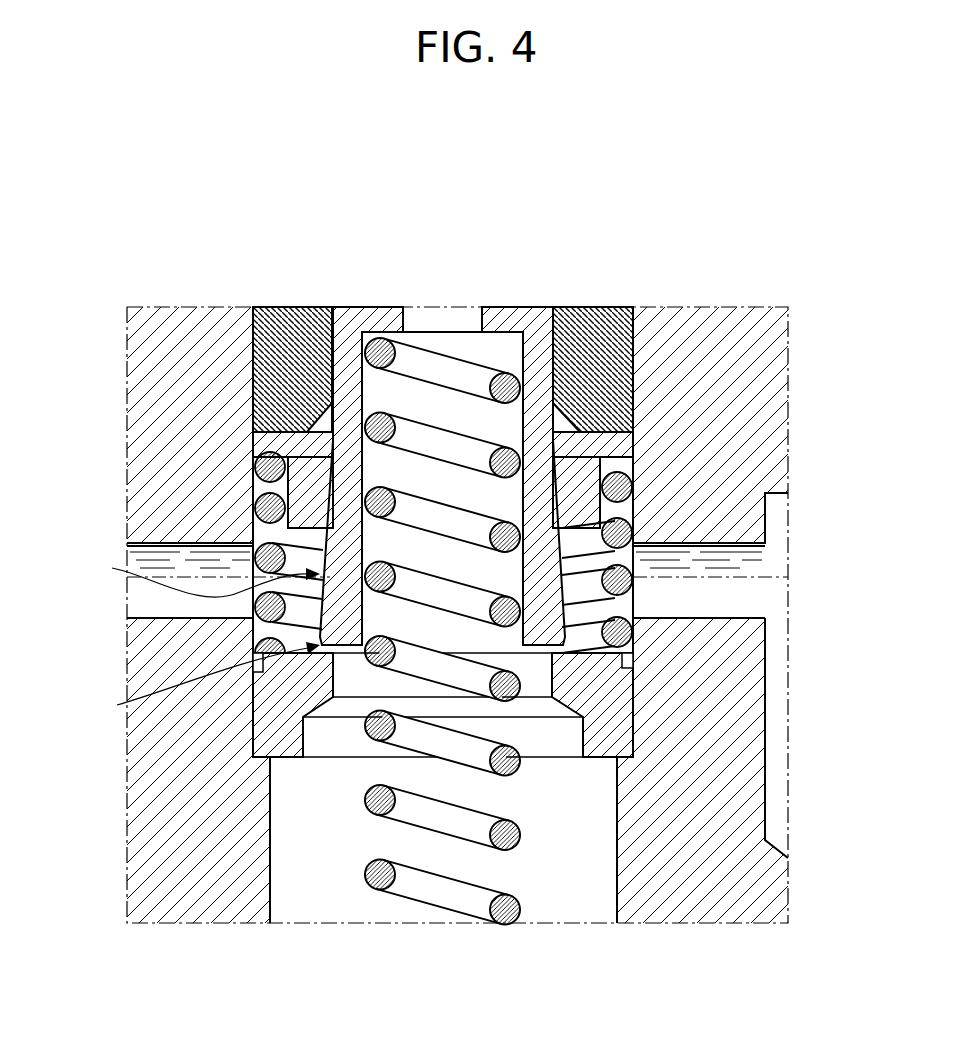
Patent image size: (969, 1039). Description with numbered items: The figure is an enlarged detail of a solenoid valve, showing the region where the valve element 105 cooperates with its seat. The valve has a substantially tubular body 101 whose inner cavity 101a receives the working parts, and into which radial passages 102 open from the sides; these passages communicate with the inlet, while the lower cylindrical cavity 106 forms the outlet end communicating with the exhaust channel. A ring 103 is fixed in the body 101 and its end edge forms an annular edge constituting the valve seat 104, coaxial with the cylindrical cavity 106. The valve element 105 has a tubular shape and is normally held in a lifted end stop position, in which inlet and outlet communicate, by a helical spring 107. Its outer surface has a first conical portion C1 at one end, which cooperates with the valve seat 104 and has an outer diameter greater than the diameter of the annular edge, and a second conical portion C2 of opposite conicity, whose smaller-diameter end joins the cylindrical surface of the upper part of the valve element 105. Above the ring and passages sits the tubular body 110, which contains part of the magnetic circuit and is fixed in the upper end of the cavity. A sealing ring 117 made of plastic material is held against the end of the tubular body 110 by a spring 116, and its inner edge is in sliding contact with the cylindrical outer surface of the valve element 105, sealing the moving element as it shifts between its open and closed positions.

The tubular body 101 is at (147, 843).
The inner cavity 101a is at (273, 877).
The radial passages 102 is at (148, 608).
The ring 103 is at (603, 757).
The valve seat 104 is at (540, 653).
The valve element 105 is at (383, 548).
The cylindrical cavity 106 is at (570, 880).
The helical spring 107 is at (397, 825).
The tubular body 110 is at (592, 307).
The spring 116 is at (631, 587).
The sealing ring 117 is at (253, 433).
The first conical portion C1 is at (200, 685).
The second conical portion C2 is at (198, 573).